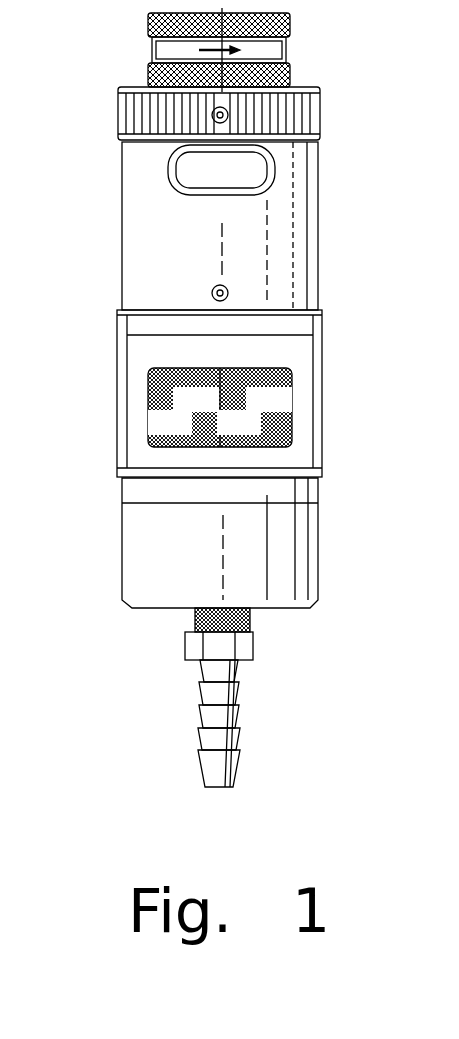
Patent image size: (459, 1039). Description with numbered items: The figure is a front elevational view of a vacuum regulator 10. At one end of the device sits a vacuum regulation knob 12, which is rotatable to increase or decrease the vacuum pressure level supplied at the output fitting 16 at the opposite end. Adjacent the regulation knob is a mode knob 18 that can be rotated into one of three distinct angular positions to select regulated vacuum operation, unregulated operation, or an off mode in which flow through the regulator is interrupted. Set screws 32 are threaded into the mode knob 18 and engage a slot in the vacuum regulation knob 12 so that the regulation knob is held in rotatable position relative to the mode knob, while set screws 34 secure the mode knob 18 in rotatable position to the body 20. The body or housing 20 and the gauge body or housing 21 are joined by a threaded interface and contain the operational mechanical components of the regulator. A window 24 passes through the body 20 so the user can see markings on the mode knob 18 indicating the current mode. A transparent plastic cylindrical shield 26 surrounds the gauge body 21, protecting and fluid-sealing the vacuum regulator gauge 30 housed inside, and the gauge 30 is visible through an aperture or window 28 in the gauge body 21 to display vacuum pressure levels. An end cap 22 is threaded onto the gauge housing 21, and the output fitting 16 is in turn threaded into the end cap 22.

The vacuum regulator 10 is at (113, 704).
The vacuum regulation knob 12 is at (290, 27).
The output fitting 16 is at (238, 712).
The mode knob 18 is at (322, 115).
The body or housing 20 is at (318, 267).
The gauge body or housing 21 is at (322, 362).
The end cap 22 is at (318, 532).
The window 24 is at (275, 170).
The transparent plastic cylindrical shield 26 is at (322, 405).
The aperture or window 28 is at (292, 432).
The vacuum regulator gauge 30 is at (112, 392).
The set screws 32 is at (213, 117).
The set screws 34 is at (212, 291).